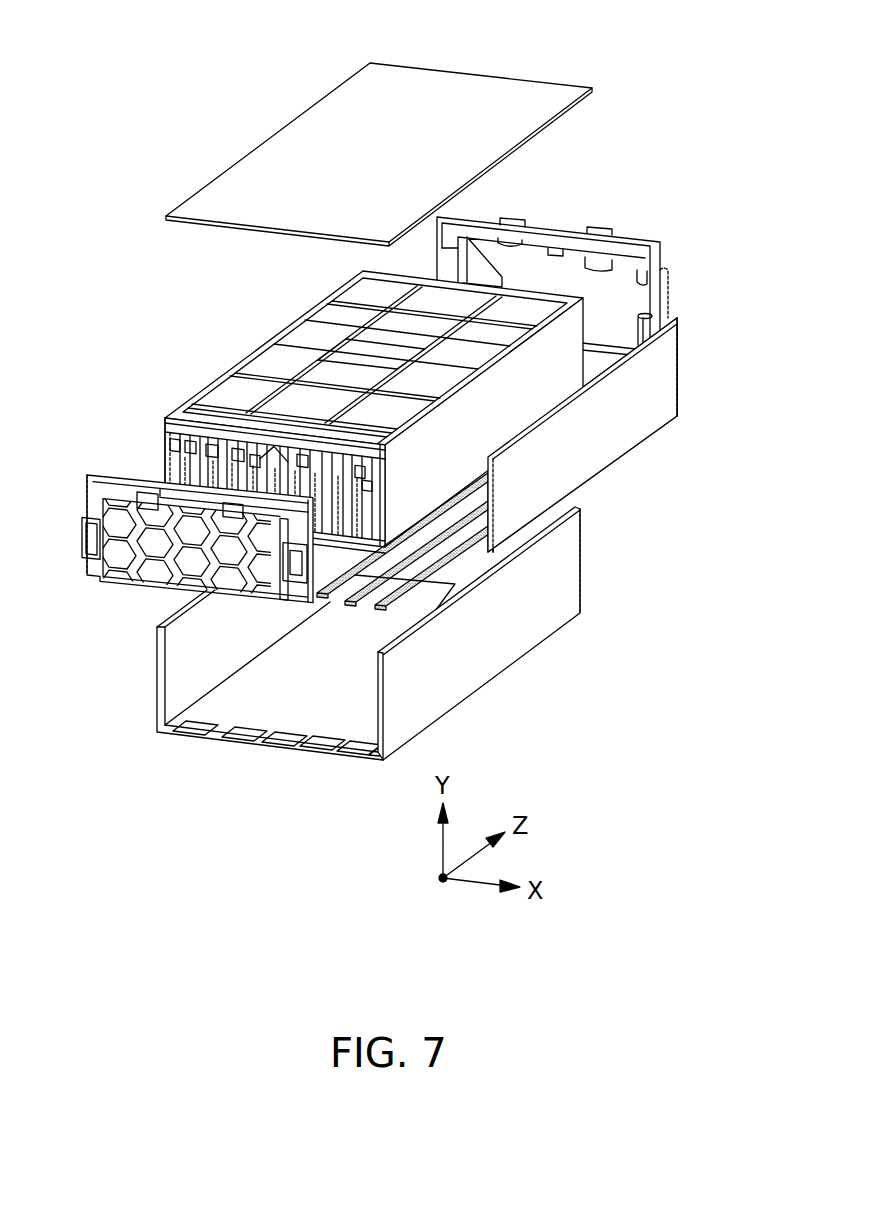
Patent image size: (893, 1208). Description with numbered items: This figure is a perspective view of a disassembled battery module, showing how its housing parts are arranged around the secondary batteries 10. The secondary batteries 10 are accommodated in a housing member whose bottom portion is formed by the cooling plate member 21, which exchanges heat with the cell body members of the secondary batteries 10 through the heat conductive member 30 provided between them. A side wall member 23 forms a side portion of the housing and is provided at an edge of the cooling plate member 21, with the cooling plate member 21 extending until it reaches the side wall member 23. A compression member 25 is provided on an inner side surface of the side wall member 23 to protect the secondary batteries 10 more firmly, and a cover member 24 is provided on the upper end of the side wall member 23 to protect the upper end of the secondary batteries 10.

The secondary batteries 10 is at (264, 334).
The cooling plate member 21 is at (278, 715).
The side wall member 23 is at (568, 553).
The cover member 24 is at (492, 90).
The compression member 25 is at (660, 360).
The heat conductive member 30 is at (402, 600).